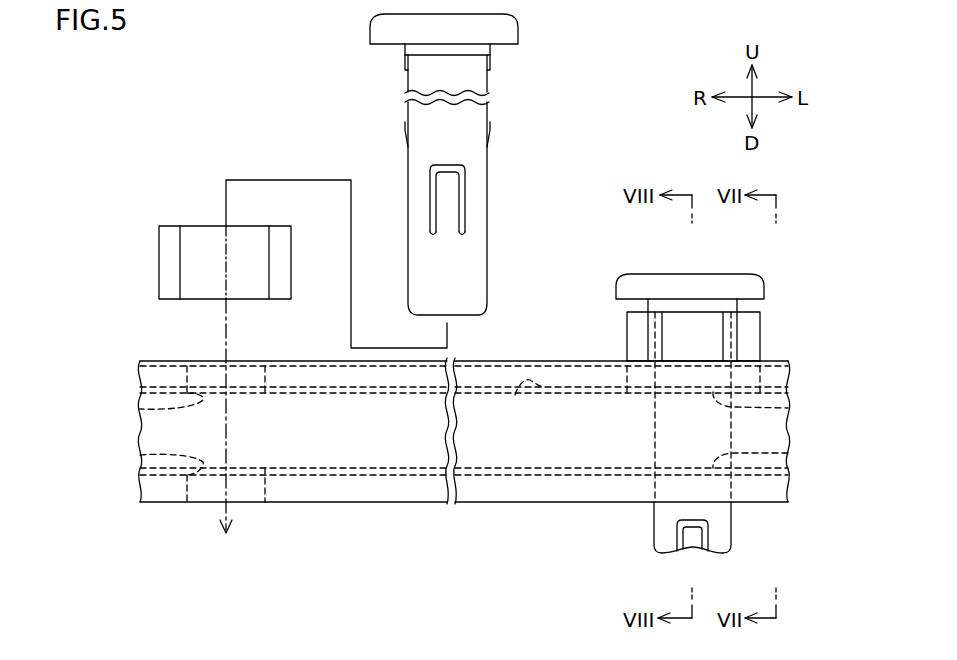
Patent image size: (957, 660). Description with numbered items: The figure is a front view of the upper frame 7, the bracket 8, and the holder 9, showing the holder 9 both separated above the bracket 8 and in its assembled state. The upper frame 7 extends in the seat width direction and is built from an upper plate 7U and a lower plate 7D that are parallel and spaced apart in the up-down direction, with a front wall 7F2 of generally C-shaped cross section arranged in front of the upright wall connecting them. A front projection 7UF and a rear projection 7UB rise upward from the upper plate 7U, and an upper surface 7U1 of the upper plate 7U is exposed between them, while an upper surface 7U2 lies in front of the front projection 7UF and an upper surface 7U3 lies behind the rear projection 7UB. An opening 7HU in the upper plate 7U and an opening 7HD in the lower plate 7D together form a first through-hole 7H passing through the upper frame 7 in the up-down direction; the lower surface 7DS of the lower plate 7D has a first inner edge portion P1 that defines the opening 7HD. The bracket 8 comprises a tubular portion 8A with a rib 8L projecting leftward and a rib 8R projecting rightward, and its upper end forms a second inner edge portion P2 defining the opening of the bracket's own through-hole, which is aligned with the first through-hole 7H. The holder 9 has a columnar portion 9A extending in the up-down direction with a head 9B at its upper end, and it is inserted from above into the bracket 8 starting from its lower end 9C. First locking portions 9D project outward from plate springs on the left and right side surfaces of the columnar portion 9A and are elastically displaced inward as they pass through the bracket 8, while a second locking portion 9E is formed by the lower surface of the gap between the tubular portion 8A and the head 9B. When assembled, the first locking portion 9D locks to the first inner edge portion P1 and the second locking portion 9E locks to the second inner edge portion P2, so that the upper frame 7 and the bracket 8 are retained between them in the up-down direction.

The upper frame 7 is at (168, 505).
The first through-hole 7H is at (140, 409).
The opening 7HU is at (464, 414).
The opening 7HD is at (464, 468).
The first inner edge portion P1 is at (184, 475).
The lower plate 7D is at (290, 475).
The upper plate 7U is at (333, 393).
The front projection 7UF is at (379, 375).
The rear projection 7UB is at (377, 576).
The lower surface 7DS is at (427, 475).
The upper surface 7U1 is at (515, 395).
The upper surface 7U2 is at (520, 556).
The upper surface 7U3 is at (563, 556).
The front wall 7F2 is at (318, 435).
The bracket 8 is at (218, 224).
The tubular portion 8A is at (208, 250).
The rib 8R is at (170, 265).
The rib 8L is at (282, 266).
The second inner edge portion P2 is at (208, 226).
The holder 9 is at (404, 89).
The columnar portion 9A is at (460, 150).
The head 9B is at (458, 30).
The lower end 9C is at (455, 315).
The first locking portion 9D is at (404, 128).
The second locking portion 9E is at (452, 57).